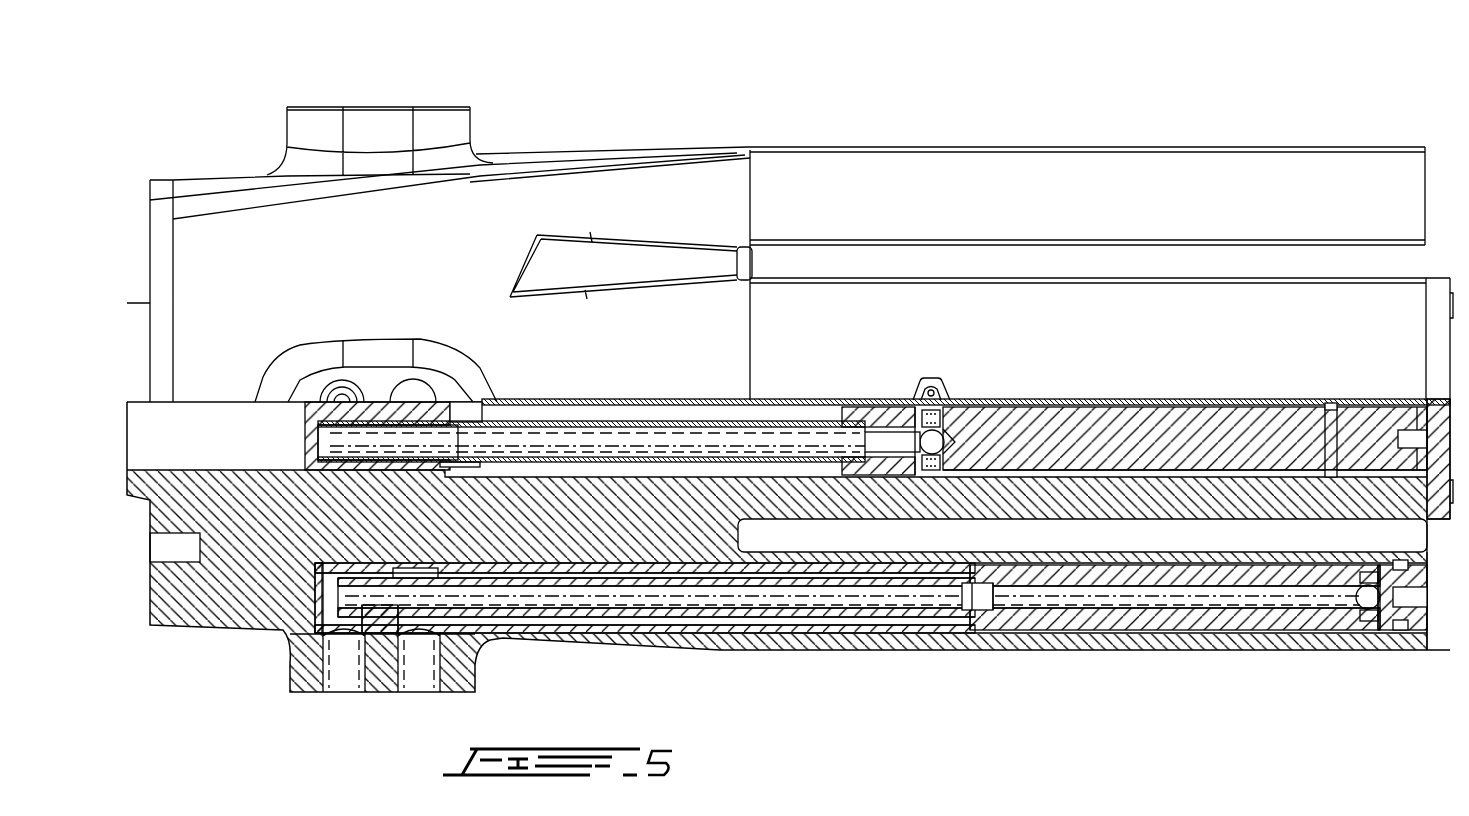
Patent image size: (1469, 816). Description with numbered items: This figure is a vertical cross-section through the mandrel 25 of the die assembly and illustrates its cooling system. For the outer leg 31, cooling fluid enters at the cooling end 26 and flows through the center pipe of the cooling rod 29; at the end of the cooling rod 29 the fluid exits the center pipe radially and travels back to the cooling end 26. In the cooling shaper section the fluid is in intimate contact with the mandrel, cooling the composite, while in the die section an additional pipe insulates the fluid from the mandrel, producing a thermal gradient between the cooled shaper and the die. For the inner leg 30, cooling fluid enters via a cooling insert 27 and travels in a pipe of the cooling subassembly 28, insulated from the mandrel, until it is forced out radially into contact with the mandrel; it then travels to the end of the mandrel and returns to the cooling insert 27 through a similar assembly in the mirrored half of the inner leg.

The mandrel 25 is at (729, 195).
The cooling end 26 is at (322, 650).
The cooling insert 27 is at (383, 403).
The cooling subassembly 28 is at (848, 465).
The cooling rod 29 is at (1133, 617).
The inner leg 30 is at (1178, 307).
The outer leg 31 is at (1296, 630).